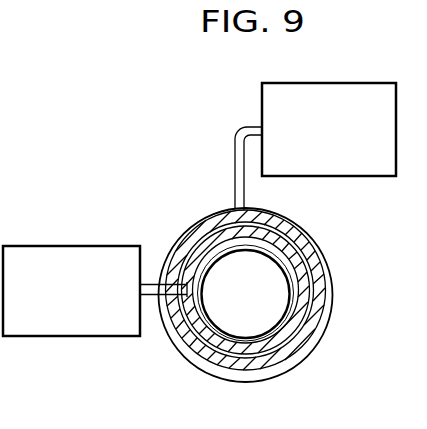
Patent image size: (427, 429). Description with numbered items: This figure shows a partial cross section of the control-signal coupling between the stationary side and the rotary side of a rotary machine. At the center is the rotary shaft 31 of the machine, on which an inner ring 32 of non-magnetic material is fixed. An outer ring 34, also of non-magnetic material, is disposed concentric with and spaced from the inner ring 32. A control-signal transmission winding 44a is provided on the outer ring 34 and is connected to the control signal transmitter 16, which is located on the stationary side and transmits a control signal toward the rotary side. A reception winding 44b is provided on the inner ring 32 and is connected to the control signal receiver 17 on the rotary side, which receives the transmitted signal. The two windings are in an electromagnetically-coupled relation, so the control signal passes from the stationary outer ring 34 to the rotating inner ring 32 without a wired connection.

The control signal transmitter 16 is at (337, 83).
The control signal receiver 17 is at (78, 246).
The rotary shaft 31 is at (214, 313).
The inner ring 32 is at (293, 277).
The outer ring 34 is at (317, 316).
The control-signal transmission winding 44a is at (283, 214).
The reception winding 44b is at (297, 246).